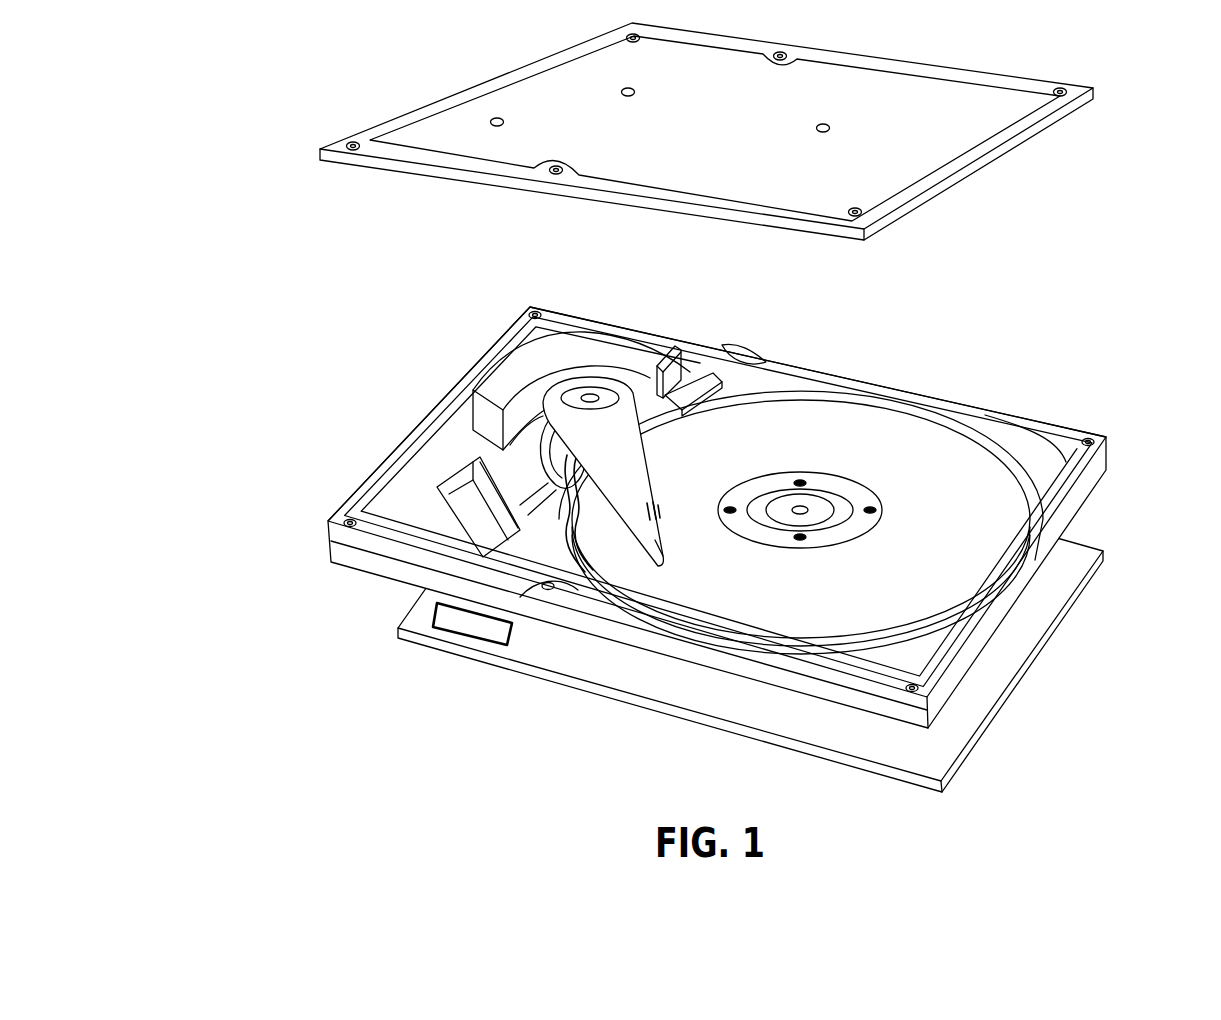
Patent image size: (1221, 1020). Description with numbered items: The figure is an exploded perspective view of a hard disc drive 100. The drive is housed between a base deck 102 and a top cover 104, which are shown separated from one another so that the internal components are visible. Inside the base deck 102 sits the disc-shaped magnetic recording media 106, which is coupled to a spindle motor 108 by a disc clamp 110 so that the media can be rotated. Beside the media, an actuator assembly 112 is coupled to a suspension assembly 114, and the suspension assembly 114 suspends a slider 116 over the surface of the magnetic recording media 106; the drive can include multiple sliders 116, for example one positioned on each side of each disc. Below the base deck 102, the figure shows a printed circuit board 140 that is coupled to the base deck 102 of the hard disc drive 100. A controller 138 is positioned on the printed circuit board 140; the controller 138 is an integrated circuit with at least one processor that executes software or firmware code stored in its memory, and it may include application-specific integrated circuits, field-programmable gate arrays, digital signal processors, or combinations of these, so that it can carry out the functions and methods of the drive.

The hard disc drive 100 is at (224, 82).
The base deck 102 is at (1082, 482).
The top cover 104 is at (914, 122).
The magnetic recording media 106 is at (975, 534).
The spindle motor 108 is at (813, 505).
The disc clamp 110 is at (852, 526).
The actuator assembly 112 is at (634, 461).
The suspension assembly 114 is at (698, 522).
The slider 116 is at (660, 566).
The controller 138 is at (470, 637).
The printed circuit board 140 is at (993, 663).